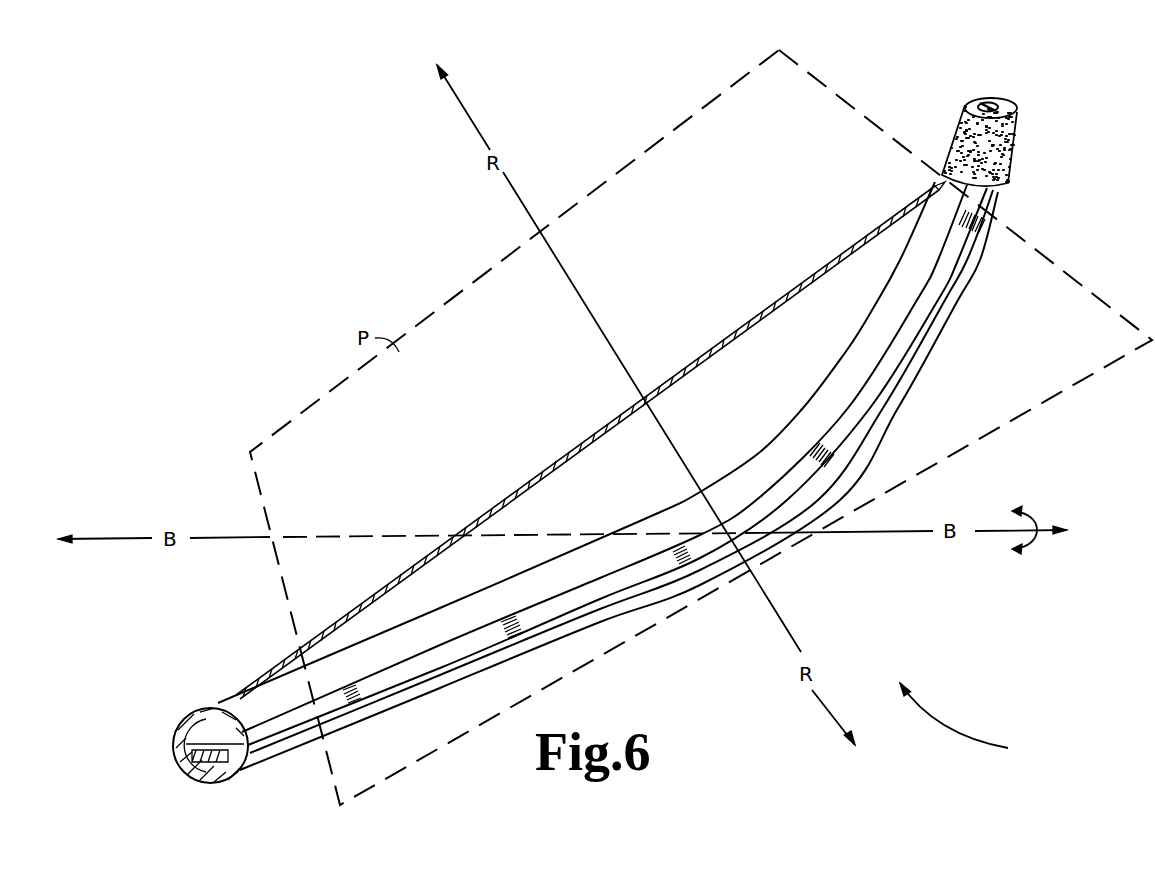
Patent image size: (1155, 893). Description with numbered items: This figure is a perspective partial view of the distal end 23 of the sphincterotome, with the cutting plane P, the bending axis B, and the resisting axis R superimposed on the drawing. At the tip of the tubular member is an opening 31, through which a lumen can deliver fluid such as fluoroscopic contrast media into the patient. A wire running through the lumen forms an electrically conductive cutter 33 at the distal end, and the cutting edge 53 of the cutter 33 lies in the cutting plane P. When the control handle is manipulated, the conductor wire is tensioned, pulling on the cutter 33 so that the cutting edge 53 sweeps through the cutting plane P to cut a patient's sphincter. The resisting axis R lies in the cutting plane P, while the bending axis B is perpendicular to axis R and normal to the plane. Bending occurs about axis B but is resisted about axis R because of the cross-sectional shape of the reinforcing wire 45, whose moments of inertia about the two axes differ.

The distal end 23 is at (970, 721).
The opening 31 is at (992, 102).
The electrically conductive cutter 33 is at (731, 342).
The reinforcing wire 45 is at (419, 684).
The cutting edge 53 is at (612, 422).